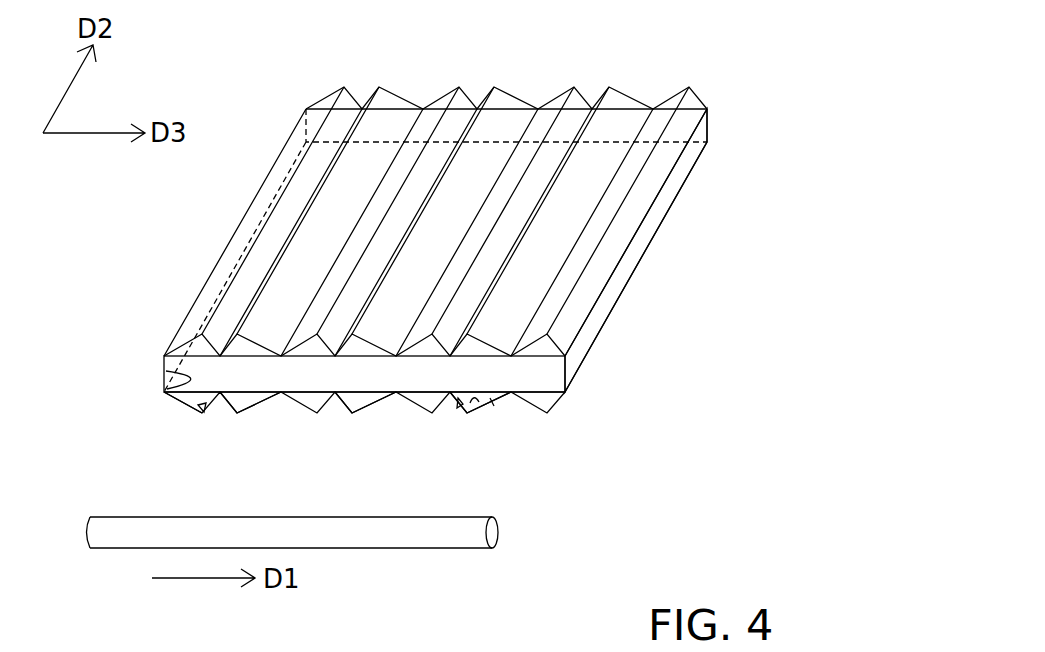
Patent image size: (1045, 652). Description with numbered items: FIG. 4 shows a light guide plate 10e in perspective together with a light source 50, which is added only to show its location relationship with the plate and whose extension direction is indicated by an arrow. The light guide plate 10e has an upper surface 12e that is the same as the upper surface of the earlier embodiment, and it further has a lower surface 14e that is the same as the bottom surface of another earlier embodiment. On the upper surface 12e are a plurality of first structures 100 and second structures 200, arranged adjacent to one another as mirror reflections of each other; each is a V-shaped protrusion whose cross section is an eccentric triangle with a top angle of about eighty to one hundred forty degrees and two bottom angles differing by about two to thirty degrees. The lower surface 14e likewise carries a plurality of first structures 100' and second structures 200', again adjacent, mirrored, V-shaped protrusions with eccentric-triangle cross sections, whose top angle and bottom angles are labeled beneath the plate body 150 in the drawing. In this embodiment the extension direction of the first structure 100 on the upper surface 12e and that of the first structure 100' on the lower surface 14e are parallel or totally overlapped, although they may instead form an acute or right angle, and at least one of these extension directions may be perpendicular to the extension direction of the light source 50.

The light guide plate 10e is at (833, 42).
The upper surface 12e is at (653, 87).
The lower surface 14e is at (640, 270).
The first structure 100 is at (394, 213).
The second structure 200 is at (354, 210).
The first structure 100' is at (334, 423).
The second structure 200' is at (395, 424).
The base portion 150 is at (396, 393).
The light source 50 is at (498, 532).